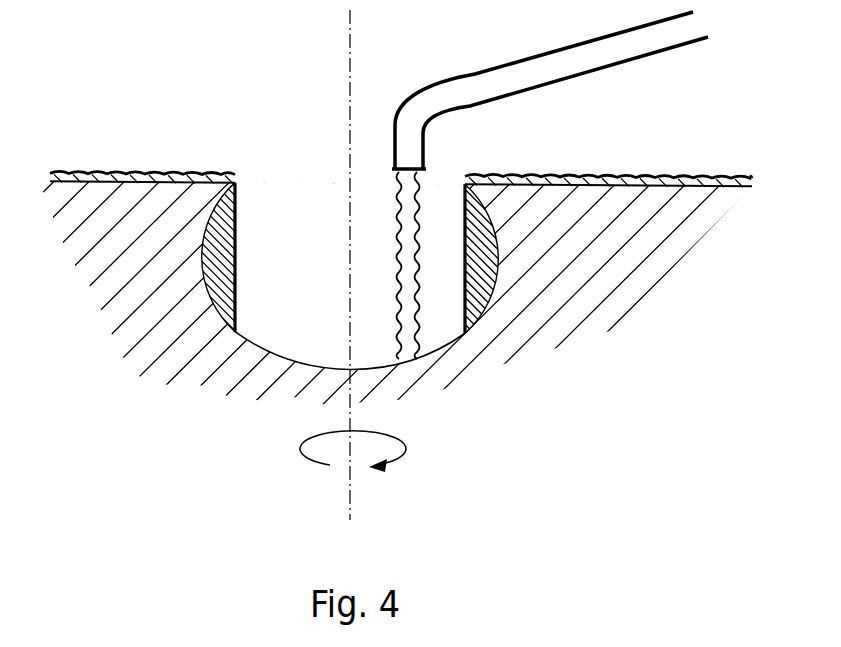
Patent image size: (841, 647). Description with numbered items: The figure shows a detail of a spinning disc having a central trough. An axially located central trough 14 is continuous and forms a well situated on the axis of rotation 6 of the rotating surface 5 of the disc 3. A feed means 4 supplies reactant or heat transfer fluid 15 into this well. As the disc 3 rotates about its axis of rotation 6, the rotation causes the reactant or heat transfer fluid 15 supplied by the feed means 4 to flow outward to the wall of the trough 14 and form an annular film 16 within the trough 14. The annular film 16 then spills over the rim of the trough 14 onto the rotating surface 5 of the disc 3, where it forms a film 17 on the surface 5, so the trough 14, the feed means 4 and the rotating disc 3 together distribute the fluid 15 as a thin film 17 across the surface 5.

The disc 3 is at (638, 324).
The feed means 4 is at (543, 86).
The rotating surface 5 is at (120, 182).
The axis of rotation 6 is at (350, 464).
The central trough 14 is at (317, 316).
The reactant or heat transfer fluid 15 is at (419, 222).
The annular film 16 is at (237, 246).
The film 17 is at (127, 173).